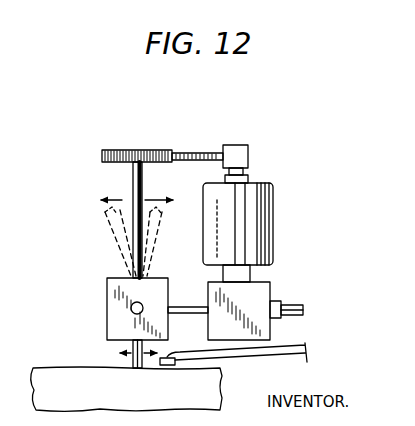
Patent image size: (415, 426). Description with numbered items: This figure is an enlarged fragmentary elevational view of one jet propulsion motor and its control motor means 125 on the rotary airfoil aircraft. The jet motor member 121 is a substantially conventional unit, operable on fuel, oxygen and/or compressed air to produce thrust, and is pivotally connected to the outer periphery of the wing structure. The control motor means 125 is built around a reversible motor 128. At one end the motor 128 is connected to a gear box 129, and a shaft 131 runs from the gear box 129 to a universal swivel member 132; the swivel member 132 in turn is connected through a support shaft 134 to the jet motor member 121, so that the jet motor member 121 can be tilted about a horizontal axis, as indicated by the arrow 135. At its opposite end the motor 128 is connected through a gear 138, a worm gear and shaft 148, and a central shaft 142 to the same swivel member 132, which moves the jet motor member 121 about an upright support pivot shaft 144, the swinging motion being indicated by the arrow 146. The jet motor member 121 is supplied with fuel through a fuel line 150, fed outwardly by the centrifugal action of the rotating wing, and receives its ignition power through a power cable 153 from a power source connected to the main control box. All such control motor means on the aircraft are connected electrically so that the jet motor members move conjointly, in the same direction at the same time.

The control motor means 125 is at (137, 130).
The worm gear and shaft 148 is at (159, 149).
The gear 138 is at (243, 152).
The reversible motor 128 is at (258, 218).
The central shaft 142 is at (136, 178).
The arrow 146 is at (120, 203).
The universal swivel member 132 is at (128, 287).
The upright support pivot shaft 144 is at (130, 309).
The shaft 131 is at (190, 306).
The gear box 129 is at (258, 290).
The power cable 153 is at (290, 307).
The support shaft 134 is at (130, 349).
The fuel line 150 is at (270, 350).
The jet motor member 121 is at (70, 389).
The arrow 135 is at (136, 368).